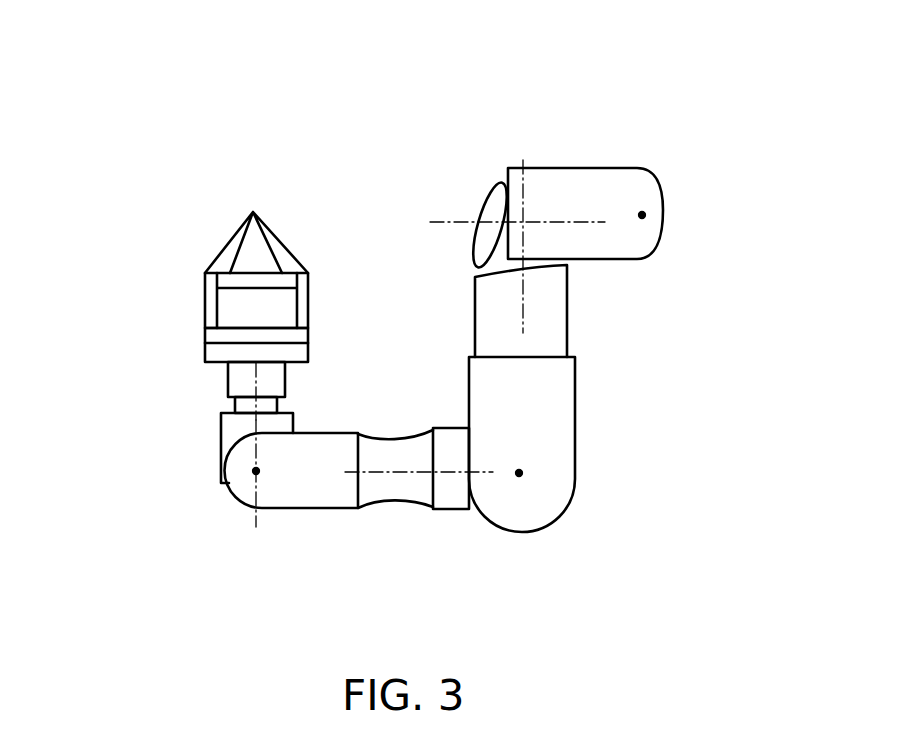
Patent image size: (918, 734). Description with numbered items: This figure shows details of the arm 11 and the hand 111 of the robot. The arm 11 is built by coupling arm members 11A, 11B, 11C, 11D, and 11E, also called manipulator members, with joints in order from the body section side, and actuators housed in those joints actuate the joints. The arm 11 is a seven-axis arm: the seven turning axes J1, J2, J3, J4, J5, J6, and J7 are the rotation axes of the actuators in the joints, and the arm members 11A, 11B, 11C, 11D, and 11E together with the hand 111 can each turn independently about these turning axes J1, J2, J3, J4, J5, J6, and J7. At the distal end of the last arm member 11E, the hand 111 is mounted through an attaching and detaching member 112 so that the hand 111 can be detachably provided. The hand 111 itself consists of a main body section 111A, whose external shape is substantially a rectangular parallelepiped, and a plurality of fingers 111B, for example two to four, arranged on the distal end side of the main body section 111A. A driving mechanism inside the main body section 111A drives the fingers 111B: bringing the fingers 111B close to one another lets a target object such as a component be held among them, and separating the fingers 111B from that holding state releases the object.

The arm 11 is at (541, 87).
The arm member 11A is at (643, 193).
The arm member 11B is at (567, 400).
The arm member 11C is at (450, 438).
The arm member 11D is at (330, 500).
The arm member 11E is at (230, 428).
The hand 111 is at (92, 297).
The main body section 111A is at (207, 300).
The fingers 111B is at (210, 254).
The attaching and detaching member 112 is at (215, 355).
The turning axis J1 is at (642, 215).
The turning axis J2 is at (458, 222).
The turning axis J3 is at (523, 166).
The turning axis J4 is at (519, 473).
The turning axis J5 is at (398, 473).
The turning axis J6 is at (256, 471).
The turning axis J7 is at (255, 425).